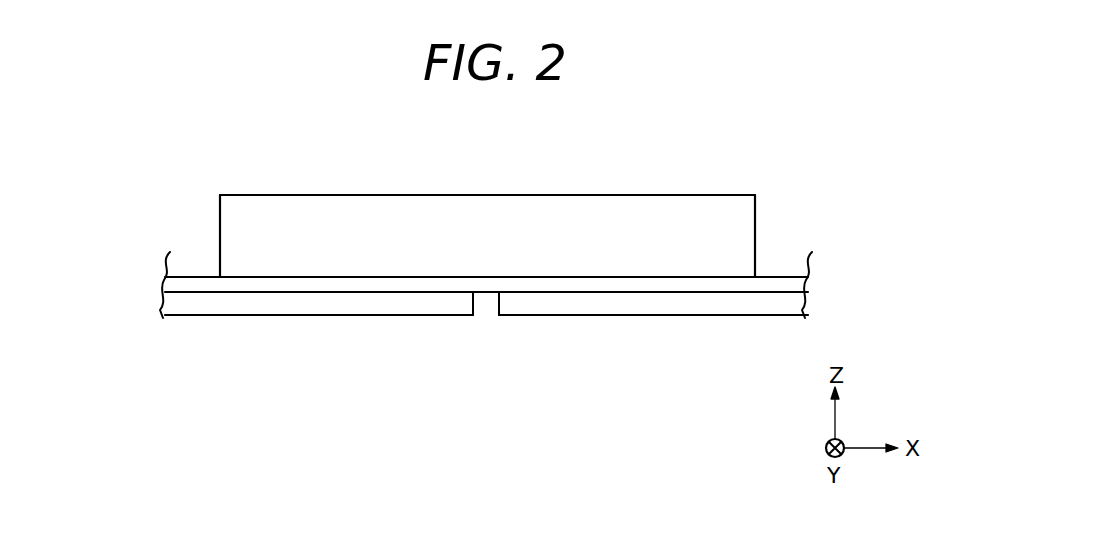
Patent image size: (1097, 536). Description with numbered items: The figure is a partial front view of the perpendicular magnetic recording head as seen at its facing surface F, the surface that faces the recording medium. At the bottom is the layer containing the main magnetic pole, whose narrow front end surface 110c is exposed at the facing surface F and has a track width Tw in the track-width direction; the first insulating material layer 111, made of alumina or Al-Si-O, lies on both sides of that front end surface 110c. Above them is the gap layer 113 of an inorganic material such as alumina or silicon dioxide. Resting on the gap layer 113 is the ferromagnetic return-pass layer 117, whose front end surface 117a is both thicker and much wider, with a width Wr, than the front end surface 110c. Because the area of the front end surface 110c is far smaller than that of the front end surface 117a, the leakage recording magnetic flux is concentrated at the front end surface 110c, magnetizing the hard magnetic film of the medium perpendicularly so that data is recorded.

The return-pass layer 117 is at (531, 225).
The front end surface of the return-pass layer 117a is at (658, 210).
The gap layer 113 is at (806, 286).
The first insulating material layer 111 is at (342, 304).
The front end surface of the main magnetic pole layer 110c is at (471, 300).
The facing surface F is at (775, 318).
The width of the front end surface of the return-pass layer Wr is at (748, 180).
The track width Tw is at (472, 342).